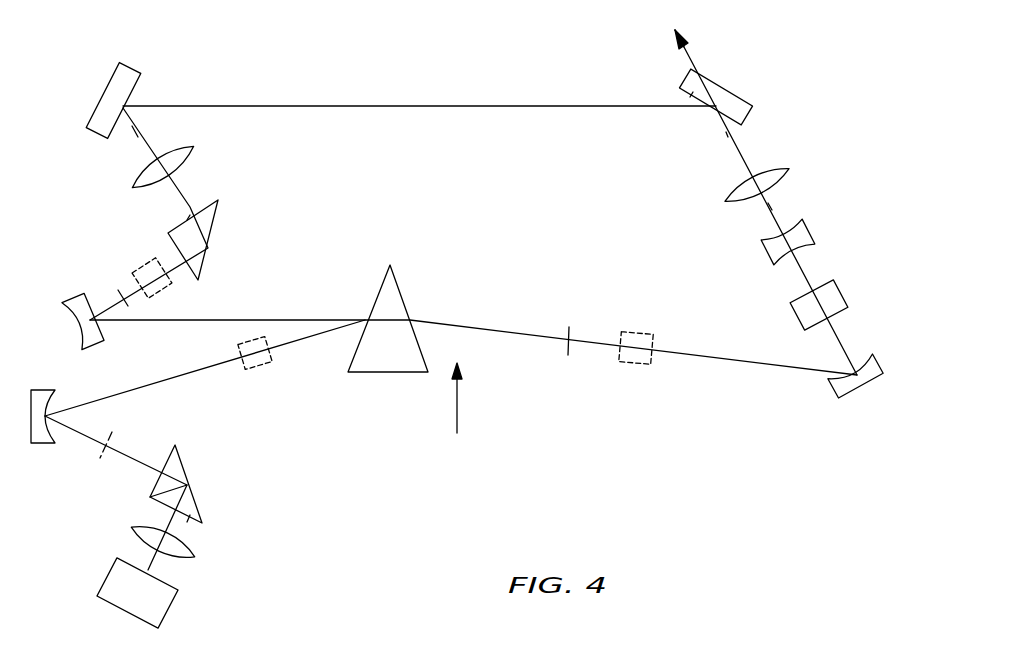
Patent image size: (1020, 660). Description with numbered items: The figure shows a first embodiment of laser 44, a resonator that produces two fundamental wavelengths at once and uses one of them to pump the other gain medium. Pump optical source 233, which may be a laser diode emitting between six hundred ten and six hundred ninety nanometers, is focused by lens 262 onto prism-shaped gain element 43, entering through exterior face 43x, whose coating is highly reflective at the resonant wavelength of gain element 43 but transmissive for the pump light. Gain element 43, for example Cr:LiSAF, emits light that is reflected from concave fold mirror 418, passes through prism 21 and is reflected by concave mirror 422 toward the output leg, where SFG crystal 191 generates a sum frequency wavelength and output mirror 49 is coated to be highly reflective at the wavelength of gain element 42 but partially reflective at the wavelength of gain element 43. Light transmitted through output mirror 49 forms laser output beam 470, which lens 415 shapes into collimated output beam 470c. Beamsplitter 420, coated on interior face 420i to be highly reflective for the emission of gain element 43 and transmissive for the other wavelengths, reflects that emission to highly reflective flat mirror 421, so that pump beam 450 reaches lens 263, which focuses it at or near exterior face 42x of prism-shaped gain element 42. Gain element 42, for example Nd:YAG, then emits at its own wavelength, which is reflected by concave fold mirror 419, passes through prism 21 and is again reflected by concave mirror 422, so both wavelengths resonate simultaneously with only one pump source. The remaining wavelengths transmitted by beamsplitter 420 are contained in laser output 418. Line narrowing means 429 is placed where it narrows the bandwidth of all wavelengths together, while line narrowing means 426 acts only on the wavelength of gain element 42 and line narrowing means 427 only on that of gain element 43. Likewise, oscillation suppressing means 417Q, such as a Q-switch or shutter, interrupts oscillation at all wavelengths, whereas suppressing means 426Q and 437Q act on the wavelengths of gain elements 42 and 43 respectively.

The highly reflective flat mirror 421 is at (135, 72).
The pump beam 450 is at (138, 137).
The lens 263 is at (193, 147).
The exterior face of gain element 42 42x is at (187, 220).
The prism-shaped gain element 42 is at (208, 224).
The line narrowing means 426 is at (113, 289).
The oscillation suppressing means 426Q is at (163, 290).
The concave fold mirror 419 is at (97, 338).
The concave fold mirror / laser output 418 is at (50, 392).
The line narrowing means 427 is at (120, 443).
The oscillation suppressing means 437Q is at (260, 370).
The prism-shaped gain element 43 is at (199, 493).
The exterior face of gain element 43 43x is at (187, 522).
The lens 262 is at (130, 527).
The pump optical source 233 is at (100, 578).
The prism 21 is at (398, 285).
The laser 44 is at (453, 414).
The line narrowing means 429 is at (577, 332).
The oscillation suppressing means 417Q is at (633, 365).
The interior face of beamsplitter 420i is at (690, 97).
The beamsplitter 420 is at (750, 110).
The collimated output beam 470c is at (728, 137).
The lens 415 is at (777, 170).
The laser output beam 470 is at (772, 210).
The output mirror 49 is at (767, 250).
The SFG crystal 191 is at (843, 297).
The concave mirror 422 is at (855, 397).